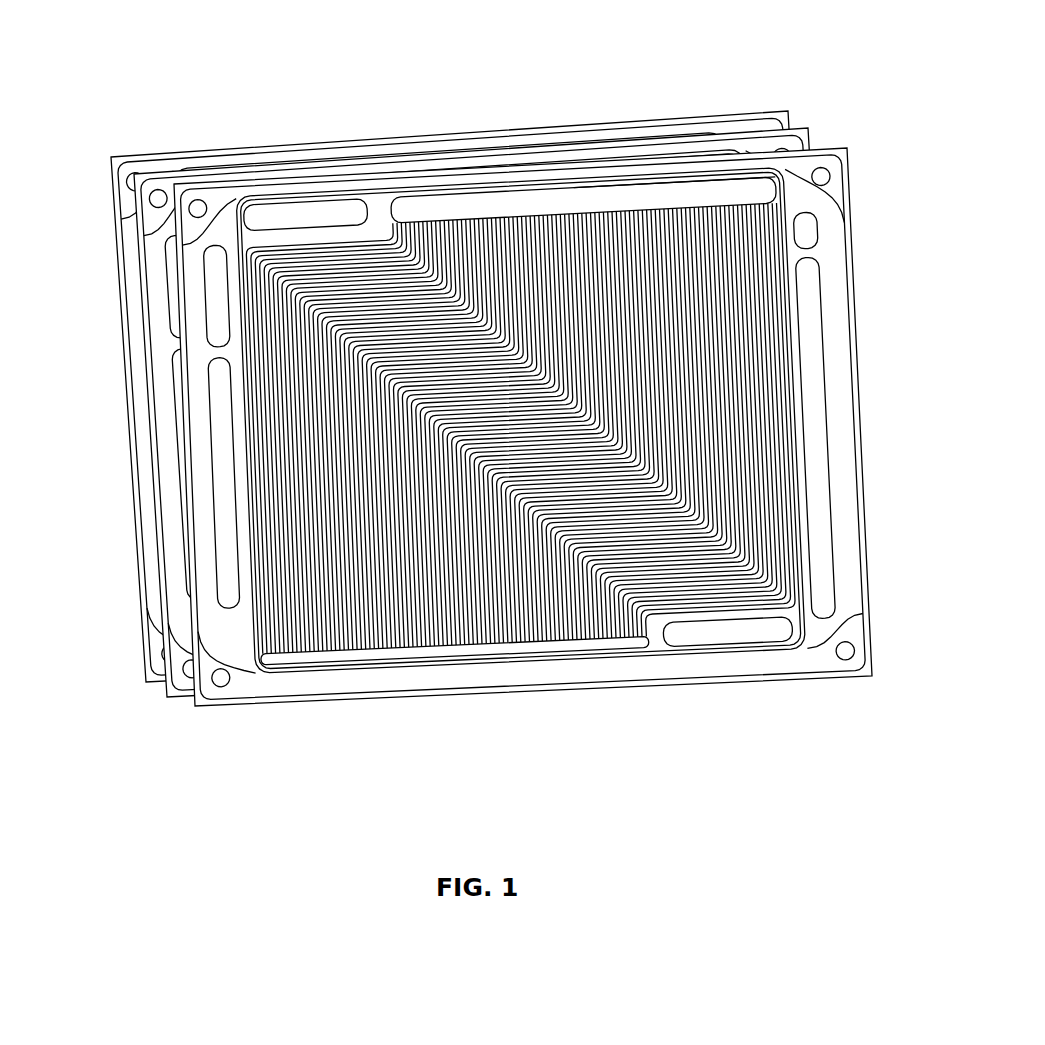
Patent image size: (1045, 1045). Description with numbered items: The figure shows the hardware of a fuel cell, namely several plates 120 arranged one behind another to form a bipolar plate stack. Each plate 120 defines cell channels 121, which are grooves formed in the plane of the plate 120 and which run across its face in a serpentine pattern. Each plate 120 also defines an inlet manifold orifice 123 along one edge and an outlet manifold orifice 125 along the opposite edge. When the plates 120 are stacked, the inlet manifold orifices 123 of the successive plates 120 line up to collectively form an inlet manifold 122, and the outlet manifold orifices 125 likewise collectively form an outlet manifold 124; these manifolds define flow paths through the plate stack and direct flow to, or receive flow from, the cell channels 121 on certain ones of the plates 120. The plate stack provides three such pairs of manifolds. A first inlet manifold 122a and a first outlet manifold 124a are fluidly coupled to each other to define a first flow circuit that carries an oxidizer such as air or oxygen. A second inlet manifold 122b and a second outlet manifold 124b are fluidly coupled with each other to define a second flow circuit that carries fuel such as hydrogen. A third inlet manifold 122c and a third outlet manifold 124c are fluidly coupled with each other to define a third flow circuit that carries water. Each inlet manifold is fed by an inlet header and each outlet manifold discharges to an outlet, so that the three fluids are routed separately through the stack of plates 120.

The plate 120 is at (375, 183).
The cell channels 121 is at (730, 218).
The inlet manifold 122 is at (505, 647).
The first inlet manifold 122a is at (297, 670).
The second inlet manifold 122b is at (222, 592).
The third inlet manifold 122c is at (718, 637).
The inlet manifold orifice 123 is at (378, 655).
The outlet manifold 124 is at (700, 185).
The first outlet manifold 124a is at (583, 178).
The second outlet manifold 124b is at (810, 455).
The third outlet manifold 124c is at (240, 210).
The outlet manifold orifice 125 is at (483, 197).